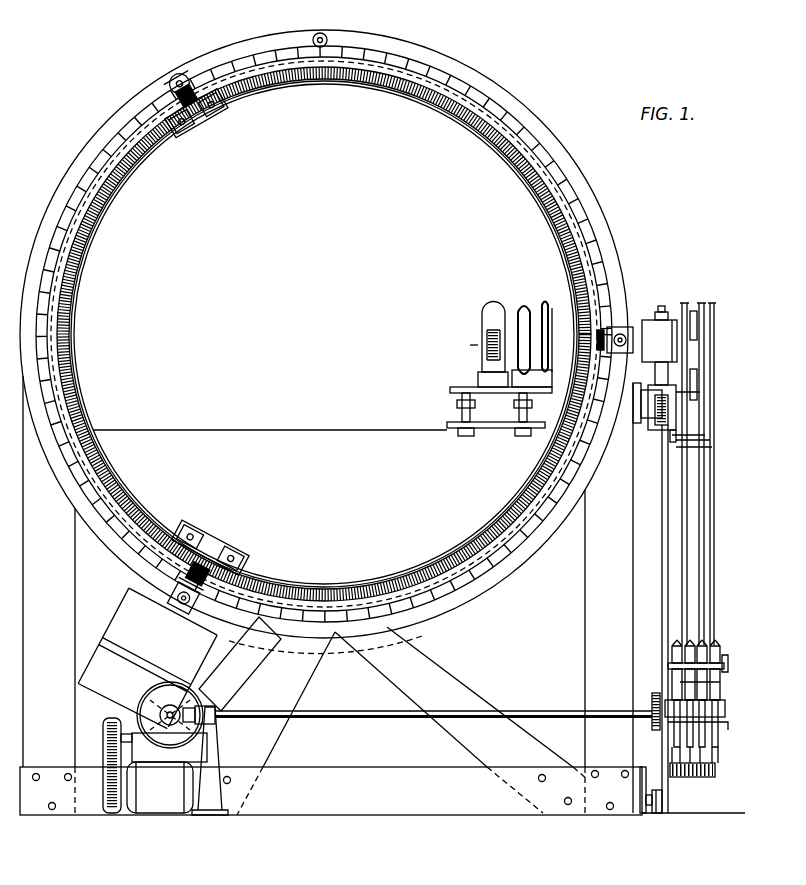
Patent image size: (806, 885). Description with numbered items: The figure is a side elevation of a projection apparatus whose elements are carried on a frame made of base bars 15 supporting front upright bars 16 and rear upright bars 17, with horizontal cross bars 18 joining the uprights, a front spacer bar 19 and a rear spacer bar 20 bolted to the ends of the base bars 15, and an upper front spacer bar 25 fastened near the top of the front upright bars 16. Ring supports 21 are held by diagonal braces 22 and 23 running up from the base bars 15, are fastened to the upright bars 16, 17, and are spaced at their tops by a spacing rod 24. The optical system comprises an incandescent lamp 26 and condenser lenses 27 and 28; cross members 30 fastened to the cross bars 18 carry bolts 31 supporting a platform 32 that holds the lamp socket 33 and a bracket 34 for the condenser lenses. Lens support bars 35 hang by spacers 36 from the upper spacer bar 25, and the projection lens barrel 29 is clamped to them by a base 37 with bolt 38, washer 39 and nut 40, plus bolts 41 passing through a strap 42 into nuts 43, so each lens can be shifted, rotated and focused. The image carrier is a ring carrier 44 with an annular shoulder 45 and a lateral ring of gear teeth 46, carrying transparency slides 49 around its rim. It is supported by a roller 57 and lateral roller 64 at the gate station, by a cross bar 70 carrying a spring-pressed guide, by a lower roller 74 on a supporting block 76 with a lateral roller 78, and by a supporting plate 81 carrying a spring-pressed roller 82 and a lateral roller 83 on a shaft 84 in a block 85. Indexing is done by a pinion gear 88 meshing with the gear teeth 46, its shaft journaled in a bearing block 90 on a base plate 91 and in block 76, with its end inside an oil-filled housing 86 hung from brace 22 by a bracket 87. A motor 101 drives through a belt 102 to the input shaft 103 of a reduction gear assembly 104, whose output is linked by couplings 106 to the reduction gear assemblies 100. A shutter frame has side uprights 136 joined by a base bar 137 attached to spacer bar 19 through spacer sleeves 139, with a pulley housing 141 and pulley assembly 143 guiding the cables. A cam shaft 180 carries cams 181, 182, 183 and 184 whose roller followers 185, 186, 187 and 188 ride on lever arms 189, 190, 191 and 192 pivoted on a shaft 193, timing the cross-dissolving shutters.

The base bars 15 is at (330, 815).
The front upright bars 16 is at (585, 628).
The rear upright bars 17 is at (62, 574).
The horizontal cross bars 18 is at (303, 428).
The front spacer bar 19 is at (641, 814).
The rear spacer bar 20 is at (30, 815).
The ring supports 21 is at (402, 86).
The diagonal brace 22 is at (316, 672).
The diagonal brace 23 is at (370, 668).
The spacing rod 24 is at (319, 33).
The upper front spacer bar 25 is at (645, 423).
The incandescent lamp 26 is at (485, 303).
The condenser lens 27 is at (522, 304).
The condenser lens 28 is at (545, 300).
The lens barrel 29 is at (650, 318).
The cross members 30 is at (512, 430).
The bolts 31 is at (520, 406).
The platform 32 is at (450, 389).
The socket 33 is at (478, 346).
The bracket 34 is at (548, 388).
The lens support bars 35 is at (676, 412).
The spacers 36 is at (676, 440).
The base 37 is at (670, 368).
The bolt 38 is at (700, 393).
The washer 39 is at (706, 436).
The nut 40 is at (713, 448).
The bolts 41 is at (700, 328).
The strap 42 is at (694, 309).
The nuts 43 is at (662, 305).
The ring carrier 44 is at (395, 600).
The annular shoulder 45 is at (584, 566).
The gear teeth 46 is at (445, 596).
The transparency slide 49 is at (486, 603).
The roller 57 is at (606, 336).
The roller 64 is at (554, 316).
The cross bar 70 is at (596, 352).
The roller 74 is at (240, 597).
The supporting block 76 is at (250, 588).
The ball-bearing roller 78 is at (168, 596).
The supporting plate 81 is at (160, 92).
The ball-bearing roller 82 is at (175, 78).
The ball-bearing roller 83 is at (195, 86).
The shaft 84 is at (176, 136).
The block 85 is at (201, 132).
The housing 86 is at (120, 613).
The bracket 87 is at (232, 648).
The pinion gear 88 is at (234, 560).
The bearing block 90 is at (215, 546).
The base plate 91 is at (186, 538).
The reduction gear assembly 100 is at (96, 668).
The motor 101 is at (160, 813).
The belt 102 is at (110, 814).
The input shaft 103 is at (126, 738).
The reduction gear assembly 104 is at (204, 706).
The couplings 106 is at (171, 702).
The side uprights 136 is at (670, 540).
The base bar 137 is at (657, 814).
The spacer sleeves 139 is at (664, 814).
The pulley housing 141 is at (716, 340).
The pulley assembly 143 is at (716, 776).
The shaft 180 is at (508, 710).
The cam 181 is at (661, 706).
The cam 182 is at (726, 712).
The cam 183 is at (722, 733).
The cam 184 is at (720, 759).
The roller follower 185 is at (668, 666).
The roller follower 186 is at (670, 697).
The roller follower 187 is at (720, 658).
The roller follower 188 is at (729, 668).
The lever arm 189 is at (672, 648).
The lever arm 190 is at (694, 642).
The lever arm 191 is at (708, 645).
The lever arm 192 is at (720, 668).
The shaft 193 is at (712, 680).